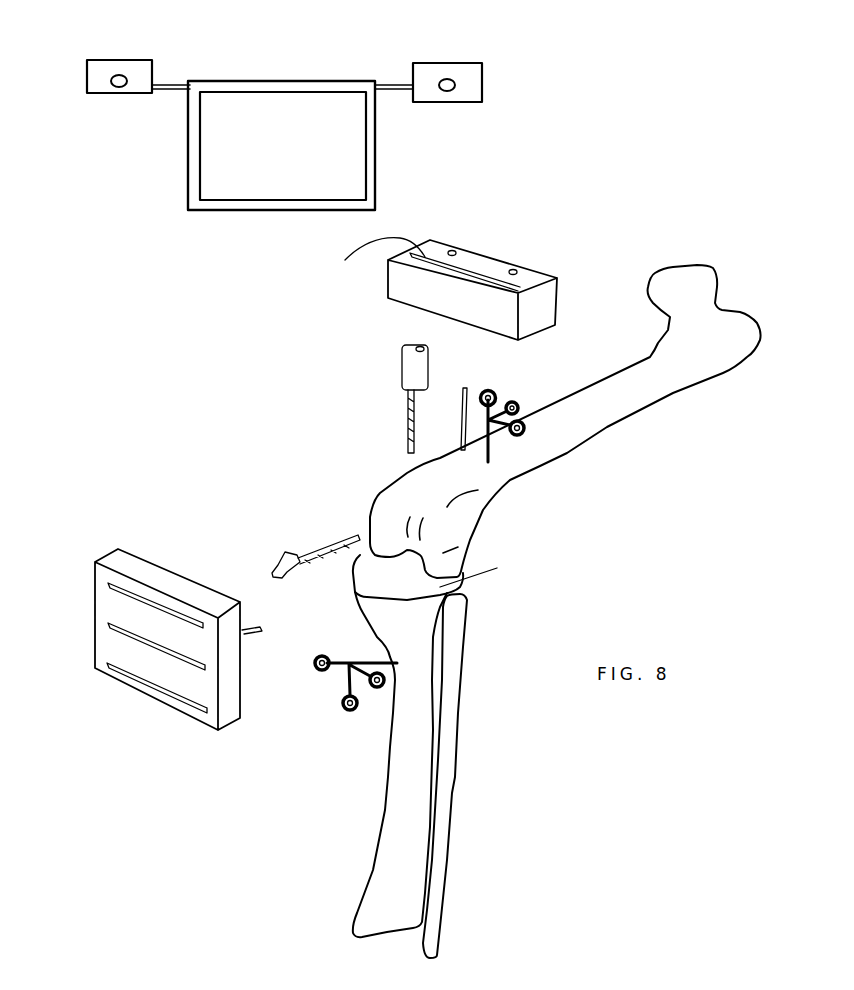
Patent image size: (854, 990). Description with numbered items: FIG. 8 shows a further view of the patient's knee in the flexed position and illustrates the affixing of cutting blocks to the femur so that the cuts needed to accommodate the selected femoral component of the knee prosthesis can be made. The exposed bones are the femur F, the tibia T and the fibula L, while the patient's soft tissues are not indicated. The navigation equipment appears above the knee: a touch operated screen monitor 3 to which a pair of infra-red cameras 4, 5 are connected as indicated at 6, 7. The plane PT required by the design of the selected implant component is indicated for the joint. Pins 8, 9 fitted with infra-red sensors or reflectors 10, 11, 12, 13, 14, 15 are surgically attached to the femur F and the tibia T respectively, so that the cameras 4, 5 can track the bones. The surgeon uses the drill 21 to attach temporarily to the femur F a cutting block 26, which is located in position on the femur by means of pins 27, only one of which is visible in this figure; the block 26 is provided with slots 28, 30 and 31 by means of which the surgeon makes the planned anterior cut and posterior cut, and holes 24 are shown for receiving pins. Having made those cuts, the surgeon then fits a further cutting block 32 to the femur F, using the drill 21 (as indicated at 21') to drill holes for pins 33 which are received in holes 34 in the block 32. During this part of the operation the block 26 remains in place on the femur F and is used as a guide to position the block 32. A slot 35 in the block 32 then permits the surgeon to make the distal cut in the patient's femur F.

The touch operated screen monitor 3 is at (278, 93).
The infra-red camera 4 is at (132, 57).
The infra-red camera 5 is at (458, 60).
The connection 6 is at (173, 80).
The connection 7 is at (393, 82).
The pin 8 is at (515, 406).
The pin 9 is at (344, 682).
The infra-red sensor or reflector 10 is at (492, 388).
The infra-red sensor or reflector 11 is at (517, 403).
The infra-red sensor or reflector 12 is at (523, 423).
The infra-red sensor or reflector 13 is at (313, 677).
The infra-red sensor or reflector 14 is at (337, 708).
The infra-red sensor or reflector 15 is at (375, 690).
The drill 21 is at (316, 542).
The drill 21' is at (394, 399).
The holes 24 is at (112, 628).
The cutting block 26 is at (95, 593).
The pins 27 is at (132, 645).
The slot 28 is at (115, 667).
The slot 30 is at (110, 617).
The slot 31 is at (110, 583).
The further cutting block 32 is at (547, 300).
The pins 33 is at (457, 423).
The holes 34 is at (513, 270).
The slot 35 is at (368, 253).
The femur F is at (548, 458).
The tibia T is at (387, 777).
The fibula L is at (457, 737).
The plane PT is at (483, 569).